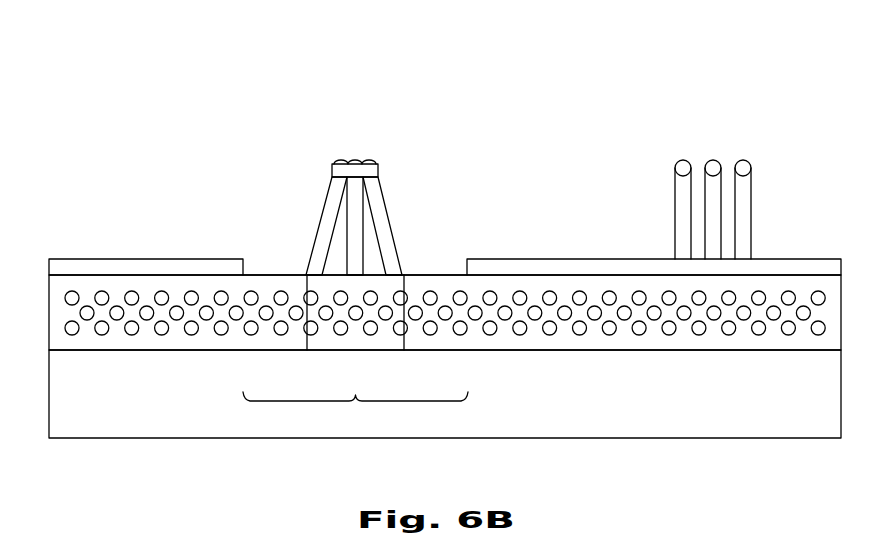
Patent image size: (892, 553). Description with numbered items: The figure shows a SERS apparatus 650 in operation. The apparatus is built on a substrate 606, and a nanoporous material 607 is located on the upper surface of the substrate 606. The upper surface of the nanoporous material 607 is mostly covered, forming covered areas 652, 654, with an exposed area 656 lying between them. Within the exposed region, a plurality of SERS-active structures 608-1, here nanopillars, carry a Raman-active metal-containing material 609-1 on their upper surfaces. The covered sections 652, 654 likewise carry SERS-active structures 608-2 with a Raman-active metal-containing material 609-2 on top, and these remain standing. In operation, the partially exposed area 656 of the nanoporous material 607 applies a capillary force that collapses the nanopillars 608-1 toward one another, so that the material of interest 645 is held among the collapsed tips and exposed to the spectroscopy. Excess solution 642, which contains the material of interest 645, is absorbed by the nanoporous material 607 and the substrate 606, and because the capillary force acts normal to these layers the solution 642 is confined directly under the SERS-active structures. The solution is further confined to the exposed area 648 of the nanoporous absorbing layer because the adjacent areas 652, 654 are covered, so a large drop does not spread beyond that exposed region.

The SERS apparatus 650 is at (150, 86).
The substrate 606 is at (106, 410).
The nanoporous material 607 is at (49, 311).
The covered area 652 is at (150, 258).
The covered area 654 is at (537, 258).
The exposed area 656 is at (438, 274).
The solution 642 is at (358, 350).
The exposed area 648 is at (355, 412).
The material of interest 645 is at (372, 170).
The SERS-active structures 608-1 is at (373, 240).
The Raman-active metal-containing material 609-1 is at (341, 156).
The SERS-active structures 608-2 is at (731, 238).
The Raman-active metal-containing material 609-2 is at (690, 151).